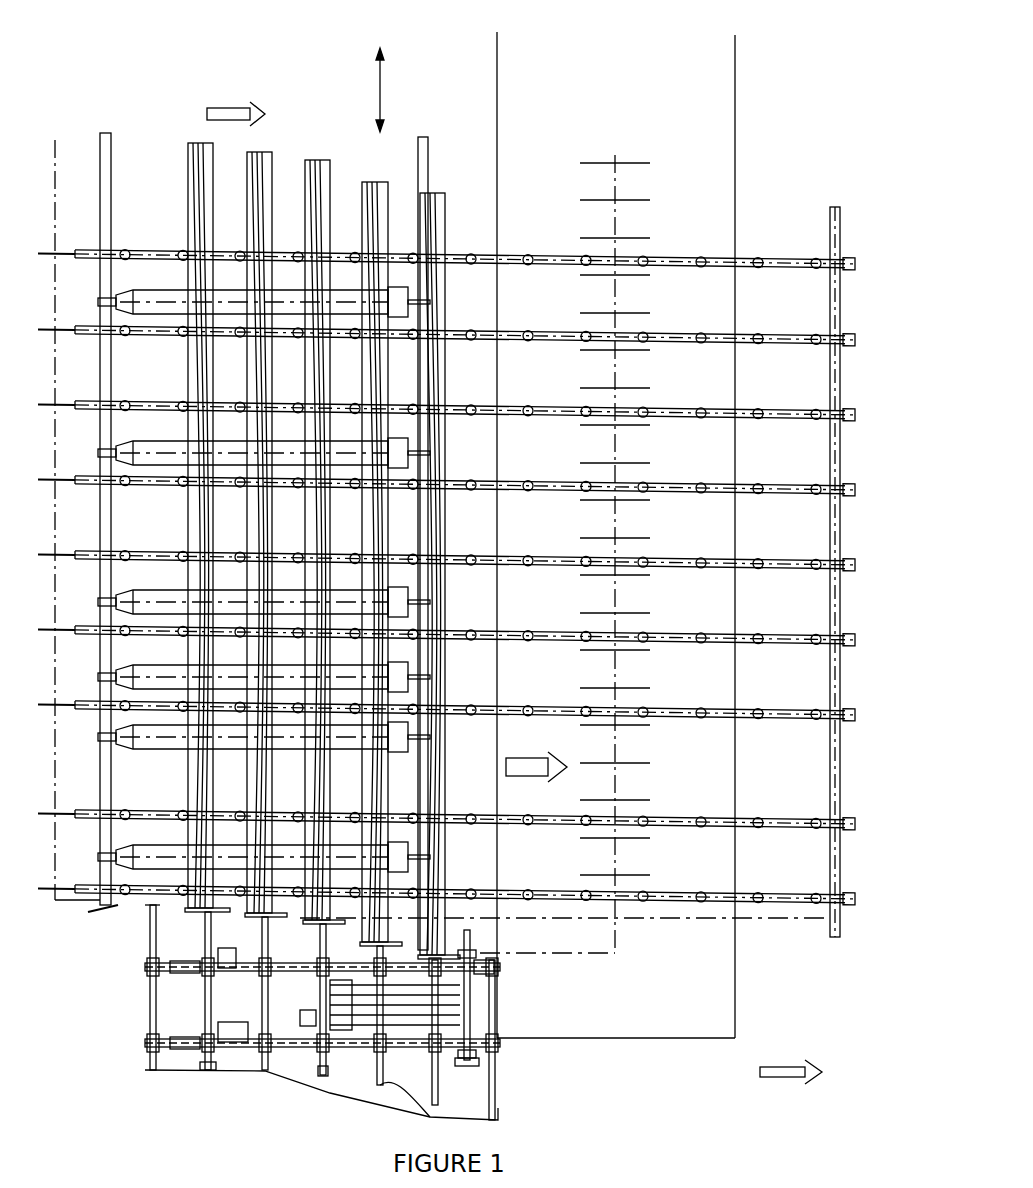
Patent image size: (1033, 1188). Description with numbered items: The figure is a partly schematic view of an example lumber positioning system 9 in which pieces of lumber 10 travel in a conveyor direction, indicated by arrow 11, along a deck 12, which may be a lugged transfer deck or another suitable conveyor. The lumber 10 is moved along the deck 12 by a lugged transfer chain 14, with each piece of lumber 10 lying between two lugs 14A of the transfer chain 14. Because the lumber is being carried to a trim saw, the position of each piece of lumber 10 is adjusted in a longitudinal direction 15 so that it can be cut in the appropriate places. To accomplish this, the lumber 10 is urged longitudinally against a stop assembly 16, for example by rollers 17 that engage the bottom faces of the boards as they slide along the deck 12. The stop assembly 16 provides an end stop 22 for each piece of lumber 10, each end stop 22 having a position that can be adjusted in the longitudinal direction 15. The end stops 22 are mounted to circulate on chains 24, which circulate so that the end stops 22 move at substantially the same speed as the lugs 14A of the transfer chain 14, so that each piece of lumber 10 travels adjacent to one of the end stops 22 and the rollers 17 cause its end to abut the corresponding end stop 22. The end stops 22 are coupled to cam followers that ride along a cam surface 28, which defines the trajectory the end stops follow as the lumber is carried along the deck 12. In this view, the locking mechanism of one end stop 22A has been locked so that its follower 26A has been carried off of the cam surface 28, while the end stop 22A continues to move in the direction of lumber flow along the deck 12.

The system 9 is at (178, 52).
The lumber 10 is at (315, 152).
The arrow 11 is at (233, 100).
The deck 12 is at (447, 283).
The lugged transfer chain 14 is at (535, 332).
The lugs 14A is at (645, 258).
The longitudinal direction 15 is at (385, 95).
The stop assembly 16 is at (128, 1058).
The rollers 17 is at (163, 680).
The end stop 22 is at (192, 908).
The end stop 22A is at (297, 921).
The chains 24 is at (222, 1070).
The cam follower 26A is at (323, 1077).
The cam surface 28 is at (440, 1118).